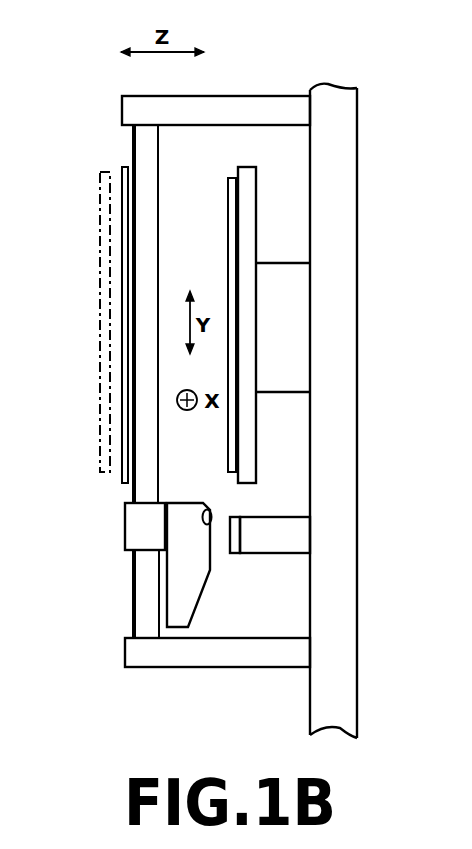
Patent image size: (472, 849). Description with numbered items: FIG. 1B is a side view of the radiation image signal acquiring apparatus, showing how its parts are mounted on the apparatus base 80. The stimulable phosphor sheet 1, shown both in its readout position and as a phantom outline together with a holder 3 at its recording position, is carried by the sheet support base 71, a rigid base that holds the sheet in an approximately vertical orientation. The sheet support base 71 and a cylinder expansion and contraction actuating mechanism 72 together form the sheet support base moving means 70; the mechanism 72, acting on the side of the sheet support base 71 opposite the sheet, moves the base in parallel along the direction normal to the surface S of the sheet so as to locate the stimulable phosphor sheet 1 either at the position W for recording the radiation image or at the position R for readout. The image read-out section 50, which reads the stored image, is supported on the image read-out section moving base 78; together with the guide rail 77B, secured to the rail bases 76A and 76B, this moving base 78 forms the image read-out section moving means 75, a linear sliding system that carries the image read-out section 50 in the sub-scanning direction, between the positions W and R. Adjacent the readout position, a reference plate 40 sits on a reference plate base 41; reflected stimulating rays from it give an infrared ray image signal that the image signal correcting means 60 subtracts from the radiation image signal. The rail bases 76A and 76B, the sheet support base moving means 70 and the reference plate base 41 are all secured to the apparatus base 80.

The stimulable phosphor sheet 1 is at (104, 178).
The substrate holder 3 is at (118, 167).
The reference plate 40 is at (235, 545).
The reference plate base 41 is at (275, 545).
The image read-out section 50 is at (183, 510).
The image signal correcting means 60 is at (209, 510).
The sheet support base moving means 70 is at (334, 297).
The sheet support base 71 is at (248, 230).
The cylinder expansion and contraction actuating mechanism 72 is at (283, 273).
The image read-out section moving means 75 is at (5, 373).
The rail base 76A is at (267, 103).
The rail base 76B is at (182, 657).
The guide rail 77B is at (143, 625).
The image read-out section moving base 78 is at (135, 540).
The apparatus base 80 is at (310, 713).
The surface of the stimulable phosphor sheet S is at (227, 223).
The position for the recording of the radiation image W is at (112, 487).
The position for the readout of the radiation image R is at (232, 478).